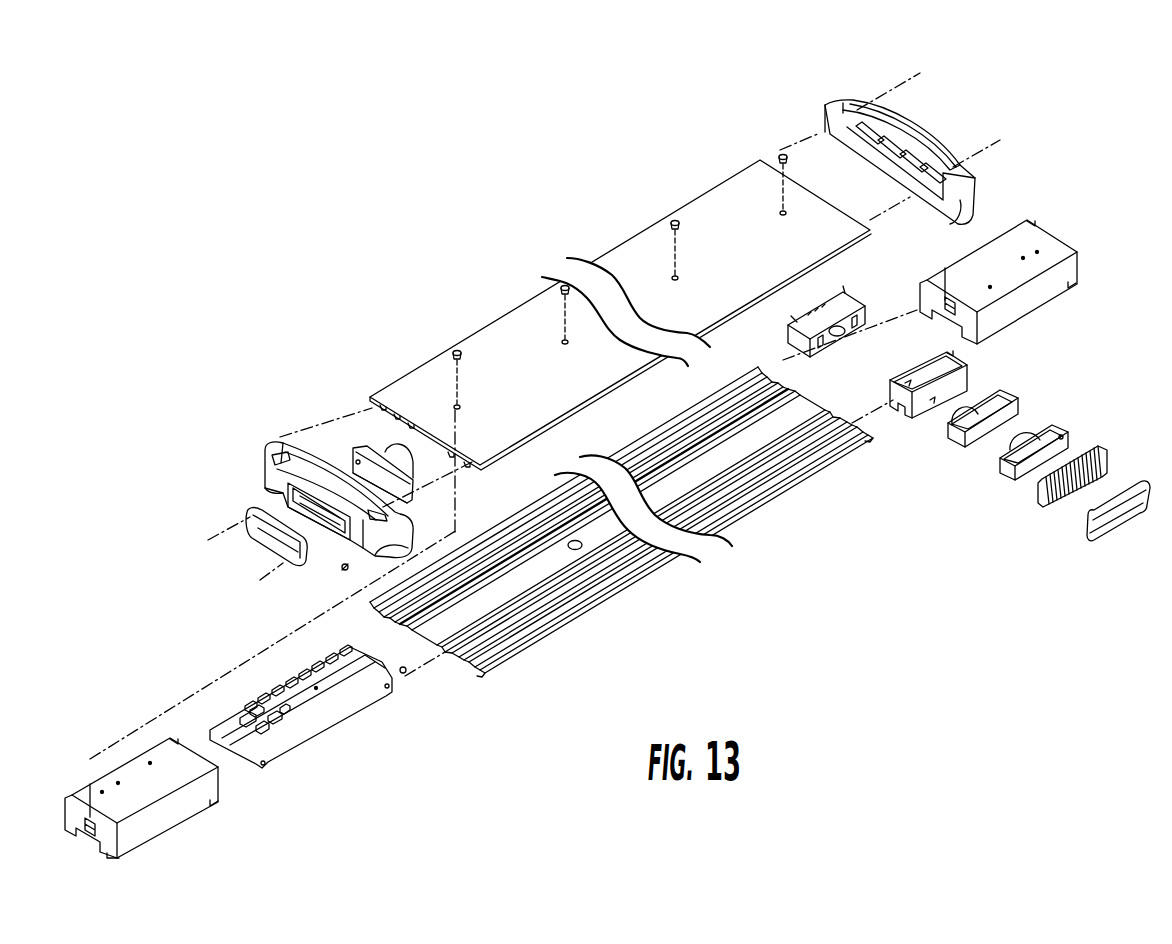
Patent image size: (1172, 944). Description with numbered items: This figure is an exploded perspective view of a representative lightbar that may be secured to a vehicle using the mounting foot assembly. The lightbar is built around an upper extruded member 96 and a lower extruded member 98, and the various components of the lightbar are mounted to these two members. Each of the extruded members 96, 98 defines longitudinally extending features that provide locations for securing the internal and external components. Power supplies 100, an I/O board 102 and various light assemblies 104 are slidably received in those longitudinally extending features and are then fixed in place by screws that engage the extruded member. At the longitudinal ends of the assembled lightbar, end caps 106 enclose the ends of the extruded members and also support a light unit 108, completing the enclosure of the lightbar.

The upper extruded member 96 is at (500, 342).
The lower extruded member 98 is at (606, 597).
The power supply 100 is at (1025, 292).
The I/O board 102 is at (323, 727).
The light assembly 104 is at (1087, 547).
The end cap 106 is at (827, 117).
The light unit 108 is at (367, 447).